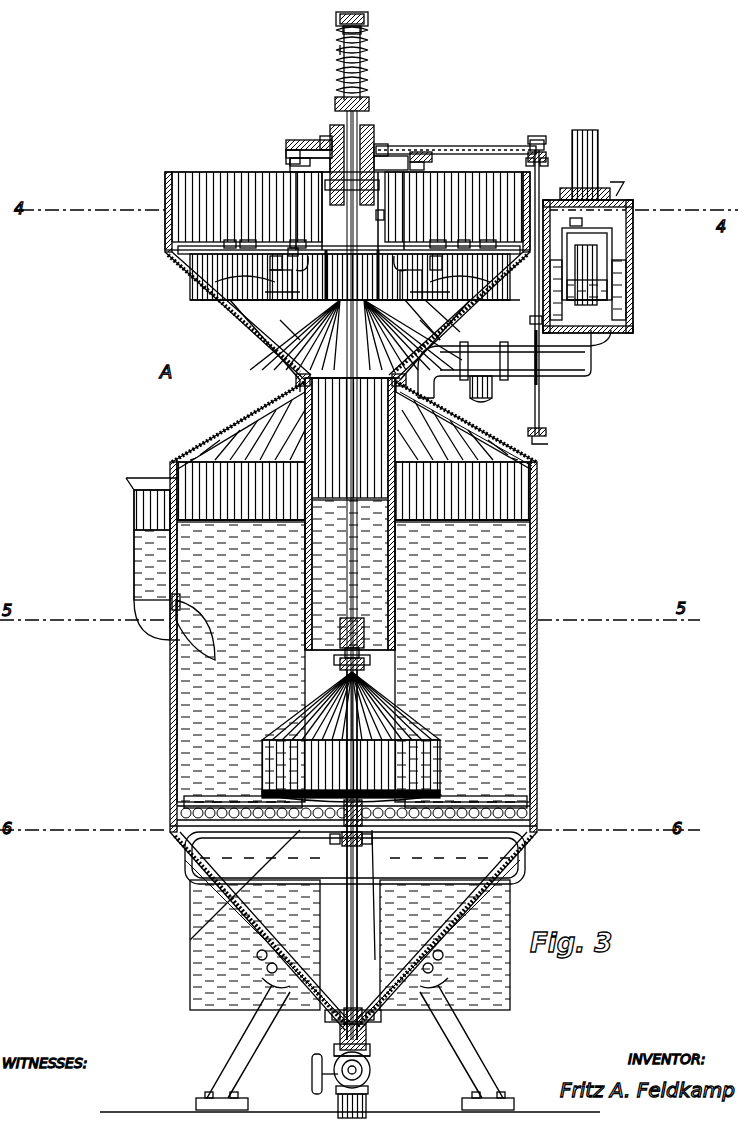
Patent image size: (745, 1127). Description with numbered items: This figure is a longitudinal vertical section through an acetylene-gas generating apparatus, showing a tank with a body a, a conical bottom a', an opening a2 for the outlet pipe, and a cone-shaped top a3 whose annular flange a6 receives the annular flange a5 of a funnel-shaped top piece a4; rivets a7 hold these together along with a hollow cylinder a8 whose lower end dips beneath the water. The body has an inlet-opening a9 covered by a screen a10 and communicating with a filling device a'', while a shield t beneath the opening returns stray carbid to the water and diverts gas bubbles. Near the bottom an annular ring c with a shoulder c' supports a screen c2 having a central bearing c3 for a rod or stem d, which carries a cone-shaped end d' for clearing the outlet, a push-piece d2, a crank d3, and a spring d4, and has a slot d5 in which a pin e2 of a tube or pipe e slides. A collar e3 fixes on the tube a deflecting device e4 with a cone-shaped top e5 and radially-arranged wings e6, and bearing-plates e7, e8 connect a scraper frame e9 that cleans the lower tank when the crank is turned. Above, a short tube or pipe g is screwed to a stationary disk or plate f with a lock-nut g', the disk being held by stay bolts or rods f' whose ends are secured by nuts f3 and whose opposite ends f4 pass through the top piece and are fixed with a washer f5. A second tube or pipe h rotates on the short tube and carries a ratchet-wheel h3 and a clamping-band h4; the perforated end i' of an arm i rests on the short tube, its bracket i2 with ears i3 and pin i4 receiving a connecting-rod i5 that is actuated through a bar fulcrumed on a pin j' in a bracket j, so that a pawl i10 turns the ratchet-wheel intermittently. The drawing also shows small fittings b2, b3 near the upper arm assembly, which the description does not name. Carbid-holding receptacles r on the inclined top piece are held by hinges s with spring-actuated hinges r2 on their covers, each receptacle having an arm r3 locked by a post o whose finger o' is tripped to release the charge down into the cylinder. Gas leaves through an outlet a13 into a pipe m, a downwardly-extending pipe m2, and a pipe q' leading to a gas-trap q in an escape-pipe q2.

The rod or stem d is at (367, 526).
The push-piece d2 is at (370, 18).
The crank d3 is at (368, 102).
The spring d4 is at (345, 48).
The slot d5 is at (350, 618).
The cone-shaped end d' is at (324, 1045).
The short tube or pipe g is at (352, 151).
The lock-nut g' is at (360, 340).
The arm boss b2 is at (330, 140).
The arm bracket b3 is at (290, 158).
The second tube or pipe h is at (398, 184).
The ratchet-wheel h3 is at (288, 168).
The clamping-band h4 is at (371, 223).
The rod or arm i is at (517, 279).
The perforated end i' is at (456, 136).
The bracket i2 is at (545, 140).
The perforated ears or lugs i3 is at (542, 160).
The pin i4 is at (545, 156).
The connecting-rod i5 is at (536, 322).
The spring-actuated pawl or dog i10 is at (424, 160).
The body a is at (368, 647).
The conical bottom a' is at (353, 931).
The filling device a'' is at (140, 559).
The opening a2 is at (368, 1034).
The cone-shaped top a3 is at (226, 438).
The funnel-shaped top piece a4 is at (205, 184).
The annular flange a5 is at (374, 360).
The annular flange a6 is at (300, 378).
The rivets a7 is at (300, 384).
The hollow cylinder a8 is at (342, 554).
The inlet-opening a9 is at (168, 640).
The screen a10 is at (190, 596).
The outlet a13 is at (452, 412).
The hinge s is at (265, 246).
The carbid-holding receptacle r is at (216, 282).
The spring-actuated hinge r2 is at (228, 246).
The arm r3 is at (268, 290).
The disk or plate f is at (431, 326).
The stay bolts or rods f' is at (356, 343).
The nuts f3 is at (330, 250).
The opposite ends f4 is at (380, 250).
The washer f5 is at (292, 250).
The arm or post o is at (310, 277).
The finger o' is at (317, 297).
The shield t is at (195, 630).
The tube or pipe e is at (338, 660).
The pin e2 is at (362, 648).
The collar e3 is at (370, 664).
The deflecting device e4 is at (351, 771).
The cone-shaped top e5 is at (312, 708).
The radially-arranged wings e6 is at (208, 796).
The bearing-plate e7 is at (344, 840).
The bearing-plate e8 is at (346, 1012).
The frame e9 is at (230, 840).
The annular ring c is at (355, 808).
The shoulder c' is at (353, 823).
The screen c2 is at (262, 838).
The bearing c3 is at (368, 840).
The pipe m is at (512, 356).
The downwardly-extending pipe m2 is at (500, 386).
The gas-trap q is at (600, 266).
The escape-pipe q2 is at (598, 158).
The pipe q' is at (553, 366).
The bracket j is at (545, 445).
The pin j' is at (531, 420).